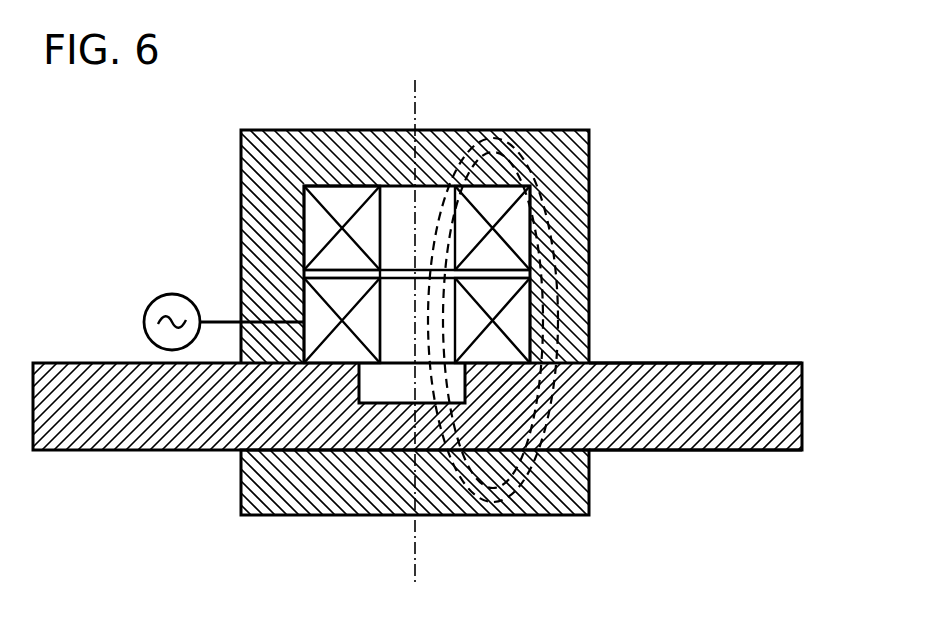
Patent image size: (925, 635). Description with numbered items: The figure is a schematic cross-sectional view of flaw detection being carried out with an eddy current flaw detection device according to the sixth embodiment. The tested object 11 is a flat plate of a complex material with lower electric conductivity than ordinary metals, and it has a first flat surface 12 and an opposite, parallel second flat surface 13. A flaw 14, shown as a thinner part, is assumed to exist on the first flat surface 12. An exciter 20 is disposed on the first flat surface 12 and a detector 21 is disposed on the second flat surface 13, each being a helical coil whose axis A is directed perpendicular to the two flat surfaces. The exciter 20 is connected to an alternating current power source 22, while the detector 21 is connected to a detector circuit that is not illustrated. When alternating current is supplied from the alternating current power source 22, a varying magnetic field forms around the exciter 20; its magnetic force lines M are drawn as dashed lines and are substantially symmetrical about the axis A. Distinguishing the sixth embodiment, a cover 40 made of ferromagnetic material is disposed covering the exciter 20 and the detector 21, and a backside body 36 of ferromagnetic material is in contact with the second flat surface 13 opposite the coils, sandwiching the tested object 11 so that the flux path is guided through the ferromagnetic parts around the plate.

The tested object 11 is at (766, 355).
The first flat surface 12 is at (665, 364).
The second flat surface 13 is at (665, 450).
The flaw 14 is at (403, 385).
The exciter 20 is at (265, 270).
The detector 21 is at (298, 212).
The alternating current power source 22 is at (160, 298).
The backside body 36 is at (322, 515).
The cover 40 is at (295, 148).
The axis A is at (415, 550).
The magnetic force lines M is at (445, 152).